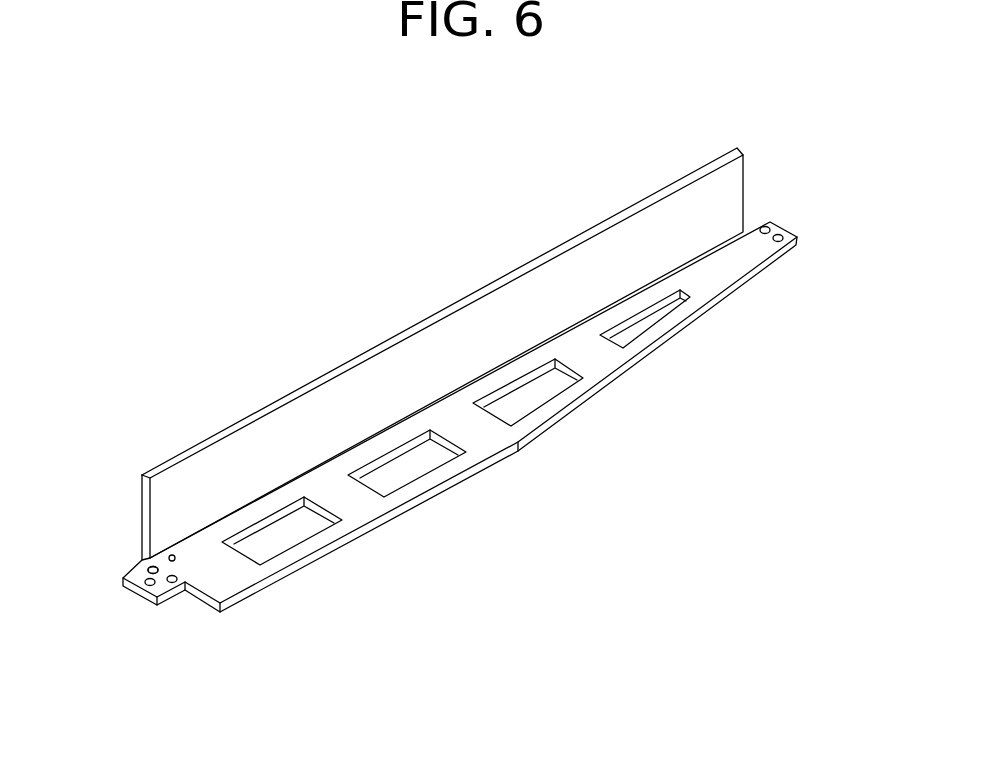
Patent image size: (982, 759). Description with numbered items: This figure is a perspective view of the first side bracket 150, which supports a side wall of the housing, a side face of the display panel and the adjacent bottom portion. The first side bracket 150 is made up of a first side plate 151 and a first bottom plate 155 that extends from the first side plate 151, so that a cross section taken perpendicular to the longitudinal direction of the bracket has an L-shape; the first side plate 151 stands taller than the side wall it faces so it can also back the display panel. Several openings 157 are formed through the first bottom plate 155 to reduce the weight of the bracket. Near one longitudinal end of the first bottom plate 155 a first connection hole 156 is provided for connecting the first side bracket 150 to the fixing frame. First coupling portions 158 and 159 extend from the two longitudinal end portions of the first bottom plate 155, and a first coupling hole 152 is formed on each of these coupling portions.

The first side bracket 150 is at (447, 403).
The first side plate 151 is at (141, 516).
The first coupling hole 152 is at (148, 564).
The first bottom plate 155 is at (460, 417).
The first connection hole 156 is at (176, 556).
The openings 157 is at (541, 389).
The first coupling portion 158 is at (135, 592).
The first coupling portion 159 is at (780, 231).